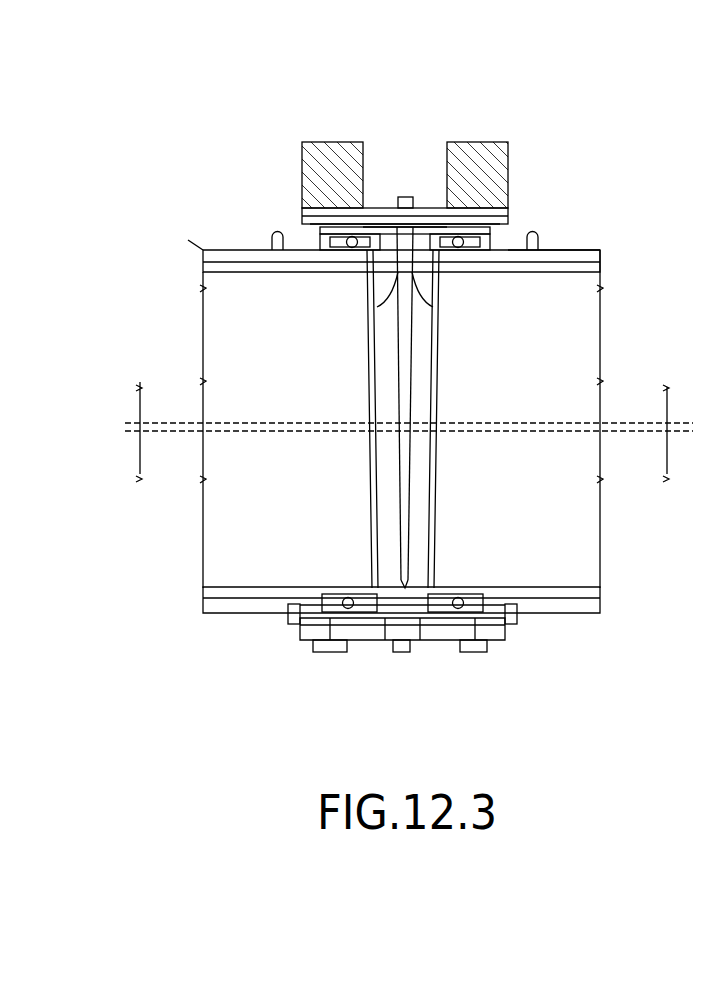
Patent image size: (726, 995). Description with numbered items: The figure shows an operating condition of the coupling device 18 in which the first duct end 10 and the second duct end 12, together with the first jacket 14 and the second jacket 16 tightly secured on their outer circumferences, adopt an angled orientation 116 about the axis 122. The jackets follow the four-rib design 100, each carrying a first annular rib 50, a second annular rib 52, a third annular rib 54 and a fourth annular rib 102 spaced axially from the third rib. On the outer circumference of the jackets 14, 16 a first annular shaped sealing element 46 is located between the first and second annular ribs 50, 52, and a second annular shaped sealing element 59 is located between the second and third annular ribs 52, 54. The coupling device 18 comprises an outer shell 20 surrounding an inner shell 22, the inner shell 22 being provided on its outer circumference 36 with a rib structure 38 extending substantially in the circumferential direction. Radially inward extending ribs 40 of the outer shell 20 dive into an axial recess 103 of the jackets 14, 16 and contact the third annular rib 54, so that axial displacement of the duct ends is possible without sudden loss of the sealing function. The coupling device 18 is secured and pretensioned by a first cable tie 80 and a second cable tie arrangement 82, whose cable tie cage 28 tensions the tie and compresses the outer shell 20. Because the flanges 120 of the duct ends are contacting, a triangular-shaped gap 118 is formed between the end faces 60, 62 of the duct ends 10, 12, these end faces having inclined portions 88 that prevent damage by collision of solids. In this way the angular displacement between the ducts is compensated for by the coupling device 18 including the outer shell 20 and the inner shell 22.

The first duct end 10 is at (203, 250).
The second duct end 12 is at (603, 247).
The first jacket 14 is at (233, 250).
The second jacket 16 is at (568, 247).
The coupling device 18 is at (637, 157).
The outer shell 20 is at (408, 663).
The inner shell 22 is at (490, 600).
The cable tie cage 28 is at (342, 142).
The outer circumference of inner shell 36 is at (390, 207).
The rib structure 38 is at (375, 207).
The radially inward extending ribs 40 is at (292, 618).
The first annular shaped sealing element 46 is at (355, 272).
The first annular rib 50 is at (388, 655).
The second annular rib 52 is at (357, 617).
The third annular rib 54 is at (347, 605).
The second annular shaped sealing element 59 is at (382, 226).
The end face of first duct end 60 is at (400, 406).
The end face of second duct end 62 is at (397, 372).
The first cable tie 80 is at (342, 662).
The second cable tie arrangement 82 is at (483, 662).
The inclined portions 88 is at (407, 303).
The four-rib design 100 is at (568, 160).
The fourth annular rib 102 is at (277, 234).
The axial recess 103 is at (318, 603).
The angled orientation 116 is at (572, 338).
The triangular-shaped gap 118 is at (402, 342).
The contacting flanges 120 is at (402, 585).
The axis 122 is at (135, 432).